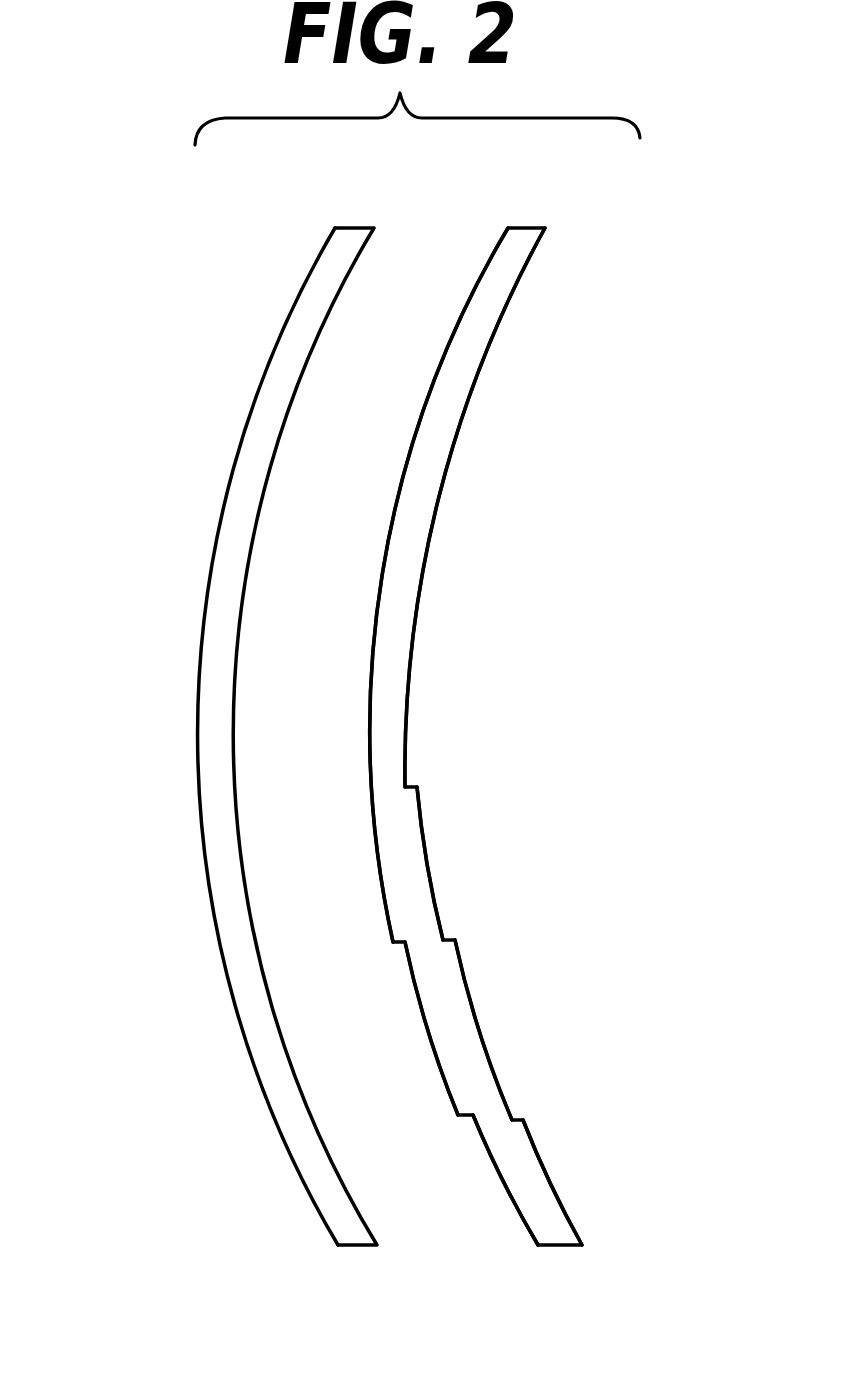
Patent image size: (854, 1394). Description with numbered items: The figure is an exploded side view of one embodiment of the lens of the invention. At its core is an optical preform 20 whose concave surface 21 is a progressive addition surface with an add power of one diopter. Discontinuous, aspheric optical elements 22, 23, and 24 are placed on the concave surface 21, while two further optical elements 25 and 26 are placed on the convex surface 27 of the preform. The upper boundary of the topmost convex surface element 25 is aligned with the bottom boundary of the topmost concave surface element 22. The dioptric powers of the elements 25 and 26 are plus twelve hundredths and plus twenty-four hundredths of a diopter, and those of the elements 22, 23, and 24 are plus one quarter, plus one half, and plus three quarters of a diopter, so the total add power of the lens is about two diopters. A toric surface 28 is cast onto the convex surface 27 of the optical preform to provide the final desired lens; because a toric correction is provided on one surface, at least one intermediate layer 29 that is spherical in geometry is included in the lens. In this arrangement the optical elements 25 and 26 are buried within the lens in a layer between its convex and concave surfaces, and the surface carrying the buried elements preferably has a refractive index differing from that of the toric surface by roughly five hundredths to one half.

The optical preform 20 is at (483, 368).
The concave surface 21 is at (409, 637).
The optical element 22 is at (427, 850).
The optical element 23 is at (478, 1025).
The optical element 24 is at (537, 1160).
The convex surface element 25 is at (425, 1025).
The optical element 26 is at (500, 1178).
The convex surface 27 is at (368, 688).
The toric surface 28 is at (197, 697).
The intermediate layer 29 is at (283, 443).